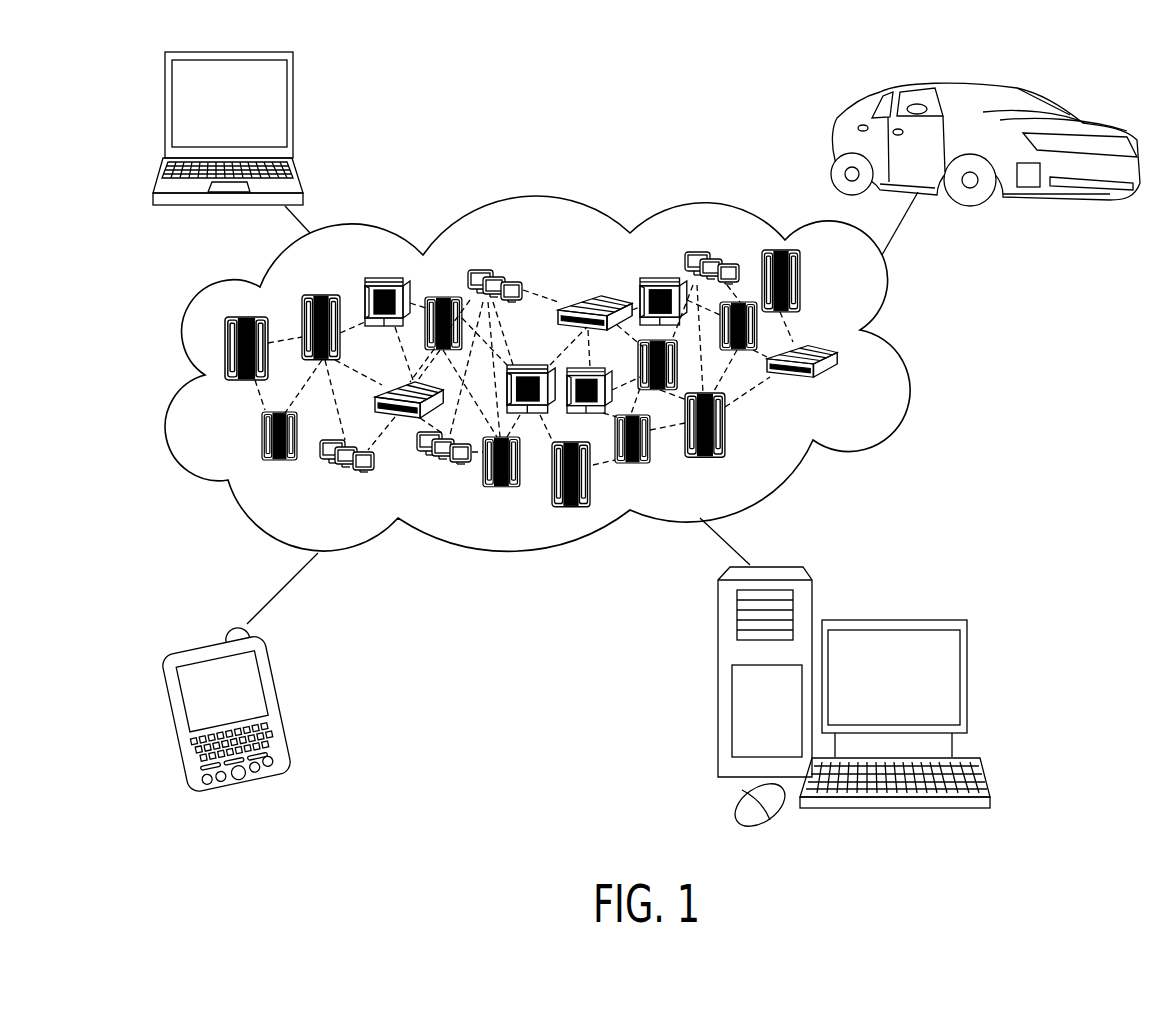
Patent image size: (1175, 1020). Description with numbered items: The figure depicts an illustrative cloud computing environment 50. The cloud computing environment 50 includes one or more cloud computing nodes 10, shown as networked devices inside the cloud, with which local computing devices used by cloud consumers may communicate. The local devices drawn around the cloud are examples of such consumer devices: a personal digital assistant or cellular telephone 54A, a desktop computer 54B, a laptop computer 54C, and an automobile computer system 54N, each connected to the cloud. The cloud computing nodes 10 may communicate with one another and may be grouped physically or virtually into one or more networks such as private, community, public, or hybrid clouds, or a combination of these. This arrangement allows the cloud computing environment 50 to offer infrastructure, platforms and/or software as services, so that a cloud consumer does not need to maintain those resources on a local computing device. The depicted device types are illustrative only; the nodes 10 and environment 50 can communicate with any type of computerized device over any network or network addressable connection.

The cloud computing node 10 is at (842, 370).
The cloud computing environment 50 is at (907, 367).
The personal digital assistant or cellular telephone 54A is at (278, 700).
The desktop computer 54B is at (927, 618).
The laptop computer 54C is at (293, 118).
The automobile computer system 54N is at (833, 132).